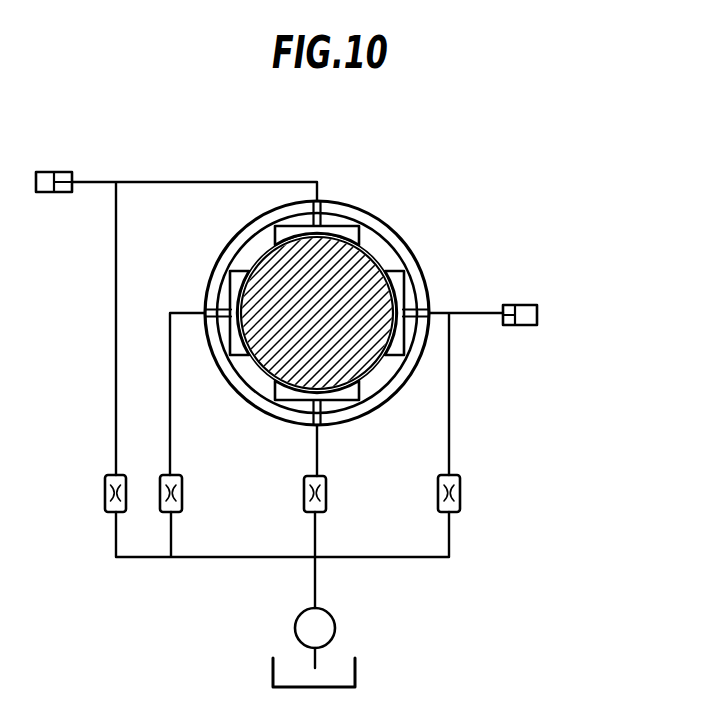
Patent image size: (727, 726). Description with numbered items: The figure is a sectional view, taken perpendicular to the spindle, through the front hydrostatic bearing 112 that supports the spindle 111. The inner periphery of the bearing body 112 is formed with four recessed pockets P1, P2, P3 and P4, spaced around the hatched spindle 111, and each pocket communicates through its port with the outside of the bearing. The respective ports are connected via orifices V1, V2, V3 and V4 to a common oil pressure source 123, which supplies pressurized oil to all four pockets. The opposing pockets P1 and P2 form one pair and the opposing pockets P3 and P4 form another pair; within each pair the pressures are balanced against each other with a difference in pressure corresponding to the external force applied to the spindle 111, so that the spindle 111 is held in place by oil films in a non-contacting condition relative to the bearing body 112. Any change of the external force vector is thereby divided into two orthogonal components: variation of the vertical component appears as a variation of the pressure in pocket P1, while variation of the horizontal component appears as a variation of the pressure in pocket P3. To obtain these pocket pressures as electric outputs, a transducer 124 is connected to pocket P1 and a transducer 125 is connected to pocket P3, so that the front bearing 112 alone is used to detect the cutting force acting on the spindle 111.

The spindle 111 is at (347, 267).
The front hydrostatic bearing 112 is at (408, 262).
The recessed pocket P1 is at (342, 227).
The recessed pocket P2 is at (337, 401).
The recessed pocket P3 is at (403, 294).
The recessed pocket P4 is at (231, 298).
The orifice V1 is at (105, 497).
The orifice V2 is at (326, 494).
The orifice V3 is at (460, 494).
The orifice V4 is at (182, 495).
The oil pressure source 123 is at (335, 628).
The transducer 124 is at (52, 195).
The transducer 125 is at (537, 314).